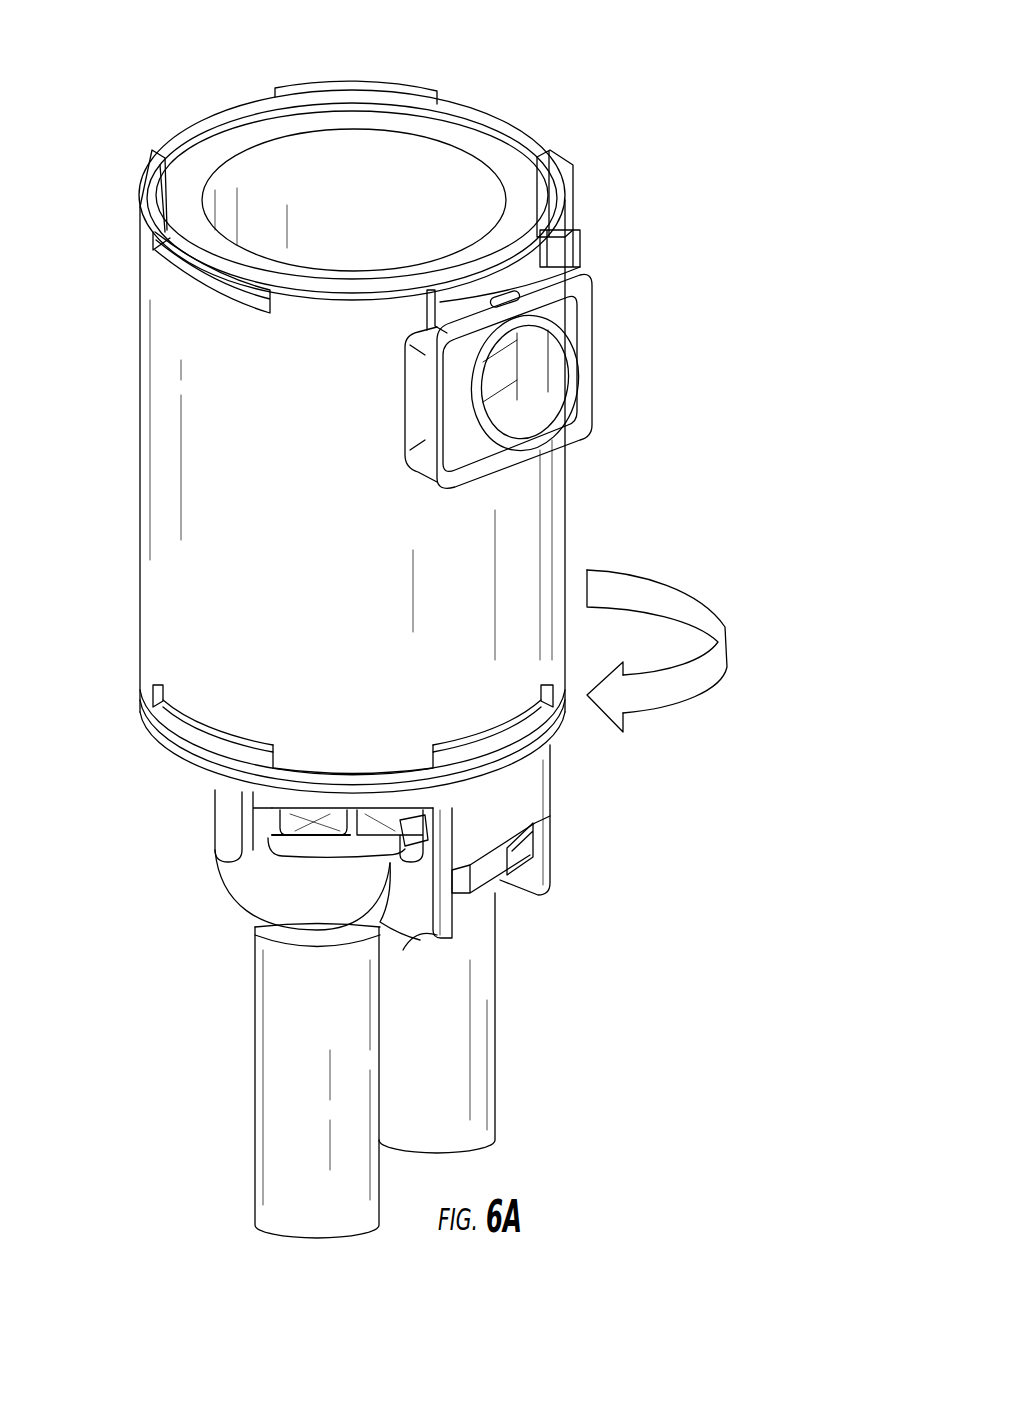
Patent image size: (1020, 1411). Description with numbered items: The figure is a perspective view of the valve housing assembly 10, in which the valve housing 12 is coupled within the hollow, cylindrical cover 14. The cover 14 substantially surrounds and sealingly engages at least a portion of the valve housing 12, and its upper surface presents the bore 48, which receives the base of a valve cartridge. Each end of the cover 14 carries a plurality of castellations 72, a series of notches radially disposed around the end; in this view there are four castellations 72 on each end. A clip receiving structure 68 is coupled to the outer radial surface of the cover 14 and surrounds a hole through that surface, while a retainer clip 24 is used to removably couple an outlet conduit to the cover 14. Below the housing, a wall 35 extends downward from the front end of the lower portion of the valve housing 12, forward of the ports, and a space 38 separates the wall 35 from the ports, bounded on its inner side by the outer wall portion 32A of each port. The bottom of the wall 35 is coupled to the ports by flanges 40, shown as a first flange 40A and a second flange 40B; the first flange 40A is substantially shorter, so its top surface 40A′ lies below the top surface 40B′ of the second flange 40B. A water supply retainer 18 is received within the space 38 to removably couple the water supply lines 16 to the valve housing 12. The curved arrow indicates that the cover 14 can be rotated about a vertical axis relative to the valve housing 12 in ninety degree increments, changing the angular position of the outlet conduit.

The valve housing assembly 10 is at (563, 100).
The valve housing 12 is at (440, 132).
The hollow, cylindrical cover 14 is at (163, 343).
The water supply lines 16 is at (483, 1110).
The water supply retainer 18 is at (280, 850).
The retainer clip 24 is at (567, 253).
The outer wall portion 32A is at (250, 822).
The wall 35 is at (470, 807).
The space 38 is at (400, 827).
The flanges 40 is at (452, 932).
The first flange 40A is at (547, 877).
The top surface of the first flange 40A′ is at (520, 852).
The second flange 40B is at (438, 922).
The top surface of the second flange 40B′ is at (418, 826).
The bore 48 is at (242, 167).
The clip receiving structure 68 is at (583, 317).
The castellations 72 is at (497, 130).